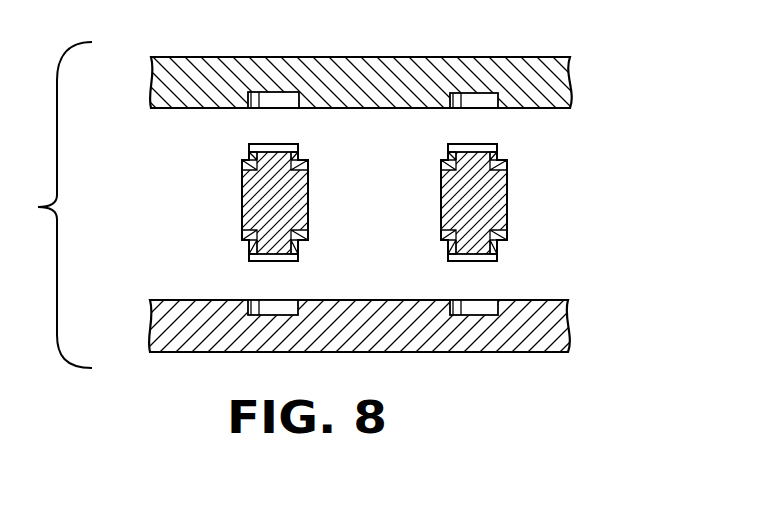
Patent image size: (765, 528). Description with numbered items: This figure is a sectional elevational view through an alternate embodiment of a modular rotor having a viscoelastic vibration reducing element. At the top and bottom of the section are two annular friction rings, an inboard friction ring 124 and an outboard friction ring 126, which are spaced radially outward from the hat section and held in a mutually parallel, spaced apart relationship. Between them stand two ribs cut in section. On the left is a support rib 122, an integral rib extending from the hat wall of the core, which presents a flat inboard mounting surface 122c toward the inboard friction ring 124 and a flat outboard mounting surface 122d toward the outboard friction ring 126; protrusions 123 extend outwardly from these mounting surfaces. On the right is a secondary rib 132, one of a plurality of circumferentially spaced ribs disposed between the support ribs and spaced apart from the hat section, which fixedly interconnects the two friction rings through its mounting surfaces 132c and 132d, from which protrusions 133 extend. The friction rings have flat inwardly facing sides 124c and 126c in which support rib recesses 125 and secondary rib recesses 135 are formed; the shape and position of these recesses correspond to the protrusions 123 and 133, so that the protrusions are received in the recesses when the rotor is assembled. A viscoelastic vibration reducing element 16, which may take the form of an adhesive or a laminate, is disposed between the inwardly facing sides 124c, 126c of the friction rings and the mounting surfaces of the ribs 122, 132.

The viscoelastic vibration reducing element 16 is at (270, 144).
The support rib 122 is at (243, 200).
The inboard mounting surface 122c is at (243, 163).
The outboard mounting surface 122d is at (243, 248).
The protrusion 123 is at (305, 158).
The inboard friction ring 124 is at (383, 57).
The flat inwardly facing side 124c is at (185, 110).
The support rib recess 125 is at (280, 300).
The outboard friction ring 126 is at (405, 352).
The flat inwardly facing side 126c is at (187, 300).
The secondary rib 132 is at (509, 192).
The mounting surface 132c is at (503, 158).
The mounting surface 132d is at (505, 245).
The protrusion 133 is at (443, 160).
The secondary rib recess 135 is at (483, 300).